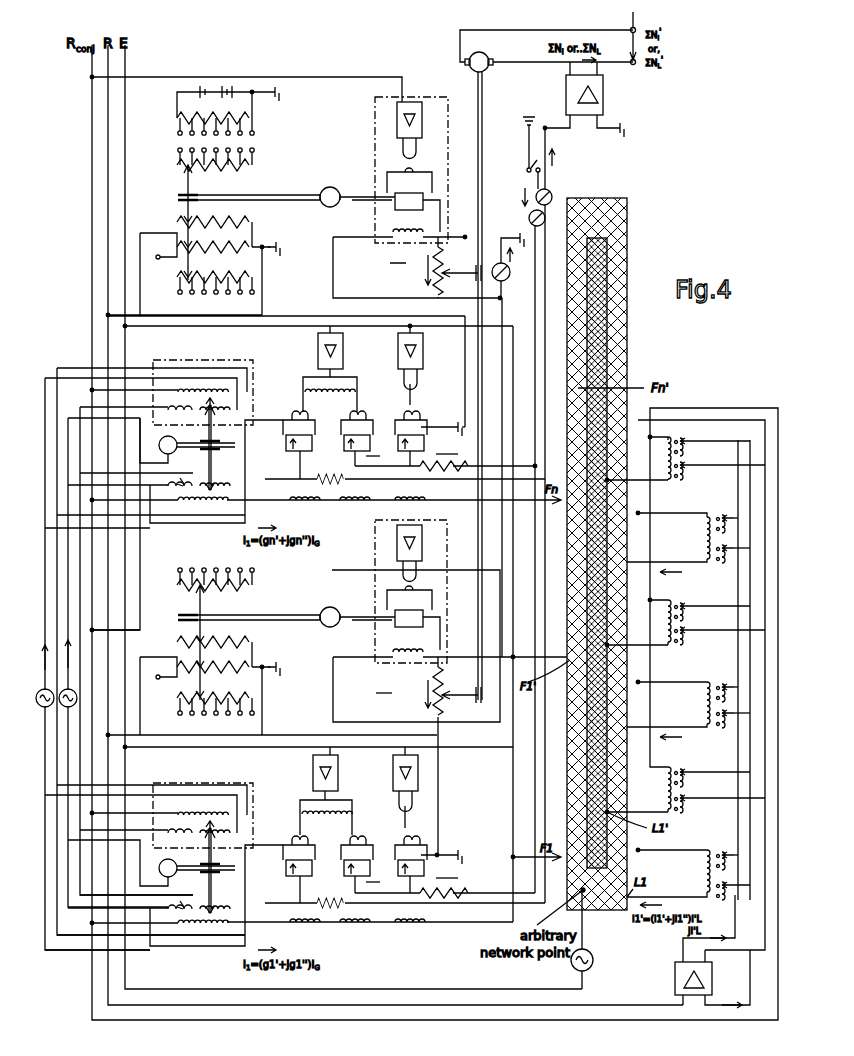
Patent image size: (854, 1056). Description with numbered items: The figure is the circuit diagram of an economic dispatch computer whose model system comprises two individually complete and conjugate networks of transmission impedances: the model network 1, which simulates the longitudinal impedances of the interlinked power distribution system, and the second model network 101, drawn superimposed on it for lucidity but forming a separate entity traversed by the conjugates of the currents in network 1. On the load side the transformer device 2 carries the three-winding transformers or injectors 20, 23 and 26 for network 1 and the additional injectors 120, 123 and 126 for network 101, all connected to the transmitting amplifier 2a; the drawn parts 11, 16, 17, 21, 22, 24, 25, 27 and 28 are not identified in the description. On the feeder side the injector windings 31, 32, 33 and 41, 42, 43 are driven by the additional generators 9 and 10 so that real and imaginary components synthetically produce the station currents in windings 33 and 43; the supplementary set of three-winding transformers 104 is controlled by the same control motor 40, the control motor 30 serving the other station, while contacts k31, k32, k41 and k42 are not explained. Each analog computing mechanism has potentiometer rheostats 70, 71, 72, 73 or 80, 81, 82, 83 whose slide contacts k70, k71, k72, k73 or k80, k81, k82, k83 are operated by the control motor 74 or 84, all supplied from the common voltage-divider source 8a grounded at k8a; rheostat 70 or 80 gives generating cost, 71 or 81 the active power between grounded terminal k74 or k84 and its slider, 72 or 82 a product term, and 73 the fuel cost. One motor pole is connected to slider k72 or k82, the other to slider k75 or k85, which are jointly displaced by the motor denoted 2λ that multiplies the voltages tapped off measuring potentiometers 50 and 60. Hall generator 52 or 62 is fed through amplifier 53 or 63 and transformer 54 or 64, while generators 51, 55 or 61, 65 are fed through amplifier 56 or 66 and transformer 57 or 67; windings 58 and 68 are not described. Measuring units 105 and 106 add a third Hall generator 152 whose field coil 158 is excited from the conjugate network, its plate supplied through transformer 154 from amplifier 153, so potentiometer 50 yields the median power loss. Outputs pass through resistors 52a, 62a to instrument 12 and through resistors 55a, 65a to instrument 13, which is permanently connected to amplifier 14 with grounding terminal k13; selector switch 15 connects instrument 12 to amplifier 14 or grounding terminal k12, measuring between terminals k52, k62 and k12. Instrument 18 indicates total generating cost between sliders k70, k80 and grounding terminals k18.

The model network 1 is at (627, 328).
The second model network 101 is at (597, 366).
The transformer device 2 is at (486, 70).
The transmitting amplifier 2a is at (675, 980).
The voltage-divider source 8a is at (177, 118).
The grounding terminal k8a is at (272, 94).
The additional generator 9 is at (36, 700).
The additional generator 10 is at (60, 704).
The voltage source 11 is at (593, 960).
The indicating instrument 12 is at (546, 220).
The indicating instrument 13 is at (554, 195).
The amplifier 14 is at (603, 84).
The selector switch 15 is at (526, 175).
The terminal 16 is at (633, 73).
The terminal 17 is at (633, 30).
The indicating instrument 18 is at (510, 274).
The grounding terminal k12 is at (524, 116).
The grounding terminal k13 is at (620, 136).
The grounding terminal k18 is at (516, 234).
The three-winding transformer 20 is at (705, 877).
The secondary winding 21 is at (723, 897).
The secondary winding 22 is at (723, 852).
The three-winding transformer 23 is at (705, 708).
The secondary winding 24 is at (723, 725).
The secondary winding 25 is at (723, 682).
The three-winding transformer 26 is at (700, 718).
The secondary winding 27 is at (726, 813).
The secondary winding 28 is at (727, 607).
The additional three-winding transformer 120 is at (669, 768).
The additional three-winding transformer 123 is at (668, 647).
The additional three-winding transformer 126 is at (668, 482).
The control motor 30 is at (160, 866).
The injector winding 31 is at (178, 916).
The injector winding 32 is at (230, 916).
The injector winding 33 is at (202, 930).
The slider contact k31 is at (186, 897).
The slider contact k32 is at (212, 901).
The control motor 40 is at (160, 443).
The injector winding 41 is at (178, 488).
The injector winding 42 is at (230, 488).
The injector winding 43 is at (202, 502).
The slider contact k41 is at (186, 474).
The slider contact k42 is at (212, 478).
The set of three-winding transformers 104 is at (194, 366).
The measuring potentiometer 50 is at (435, 671).
The Hall generator 51 is at (350, 878).
The Hall generator 52 is at (400, 864).
The ohmic resistor 52a is at (447, 896).
The amplifier 53 is at (393, 766).
The transformer 54 is at (420, 824).
The Hall generator 55 is at (288, 878).
The resistor 55a is at (331, 905).
The amplifier 56 is at (313, 766).
The transformer 57 is at (310, 812).
The winding 58 is at (407, 924).
The grounding terminal k52 is at (458, 849).
The slider k75 is at (450, 698).
The measuring unit 105 is at (375, 550).
The third Hall generator 152 is at (418, 627).
The amplifier 153 is at (420, 546).
The transformer 154 is at (414, 592).
The magnetic field coil 158 is at (388, 650).
The measuring potentiometer 60 is at (436, 249).
The Hall generator 61 is at (350, 454).
The Hall generator 62 is at (400, 438).
The ohmic resistor 62a is at (447, 470).
The amplifier 63 is at (398, 344).
The transformer 64 is at (420, 396).
The Hall generator 65 is at (288, 454).
The resistor 65a is at (329, 484).
The amplifier 66 is at (318, 344).
The transformer 67 is at (312, 388).
The winding 68 is at (292, 498).
The grounding terminal k62 is at (458, 422).
The slider k85 is at (454, 277).
The additional measuring unit 106 is at (374, 126).
The potentiometer rheostat 70 is at (177, 700).
The potentiometer rheostat 71 is at (177, 668).
The potentiometer rheostat 72 is at (177, 643).
The potentiometer rheostat 73 is at (177, 585).
The control motor 74 is at (326, 610).
The slide contact k70 is at (204, 686).
The slide contact k71 is at (204, 653).
The slide contact k72 is at (210, 638).
The slide contact k73 is at (204, 600).
The grounded terminal k74 is at (276, 664).
The voltage divider 80 is at (177, 280).
The potentiometer 81 is at (177, 248).
The potentiometer 82 is at (177, 223).
The potentiometer rheostat 83 is at (177, 165).
The control motor 84 is at (320, 190).
The slide contact k80 is at (184, 268).
The slide contact k81 is at (192, 233).
The slide contact k82 is at (184, 209).
The slide contact k83 is at (192, 178).
The grounded terminal k84 is at (276, 244).